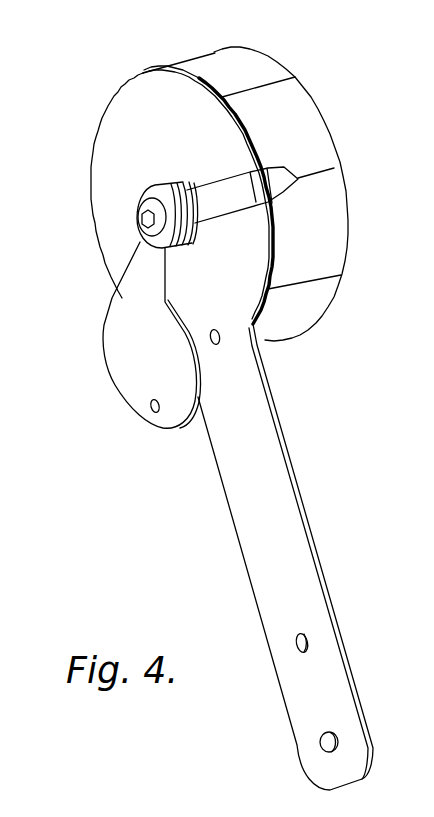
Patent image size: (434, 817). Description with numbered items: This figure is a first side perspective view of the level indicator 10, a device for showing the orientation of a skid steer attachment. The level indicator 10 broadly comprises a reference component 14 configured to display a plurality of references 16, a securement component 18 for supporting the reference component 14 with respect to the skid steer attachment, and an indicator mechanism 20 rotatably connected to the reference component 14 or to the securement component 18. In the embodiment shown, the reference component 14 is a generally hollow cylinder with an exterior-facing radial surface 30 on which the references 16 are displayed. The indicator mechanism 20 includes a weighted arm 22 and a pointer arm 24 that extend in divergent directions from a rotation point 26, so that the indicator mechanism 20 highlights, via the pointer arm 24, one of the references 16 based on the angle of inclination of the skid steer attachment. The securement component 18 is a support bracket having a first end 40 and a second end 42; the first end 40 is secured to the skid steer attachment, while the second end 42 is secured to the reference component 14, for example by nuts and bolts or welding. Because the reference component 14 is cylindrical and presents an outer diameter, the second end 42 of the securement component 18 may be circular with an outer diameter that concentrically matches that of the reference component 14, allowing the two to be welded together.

The level indicator 10 is at (84, 70).
The reference component 14 is at (268, 68).
The references 16 is at (328, 66).
The securement component 18 is at (263, 532).
The indicator mechanism 20 is at (98, 287).
The weighted arm 22 is at (137, 390).
The pointer arm 24 is at (233, 193).
The rotation point 26 is at (141, 219).
The exterior-facing radial surface 30 is at (225, 63).
The first end 40 is at (303, 715).
The second end 42 is at (153, 83).